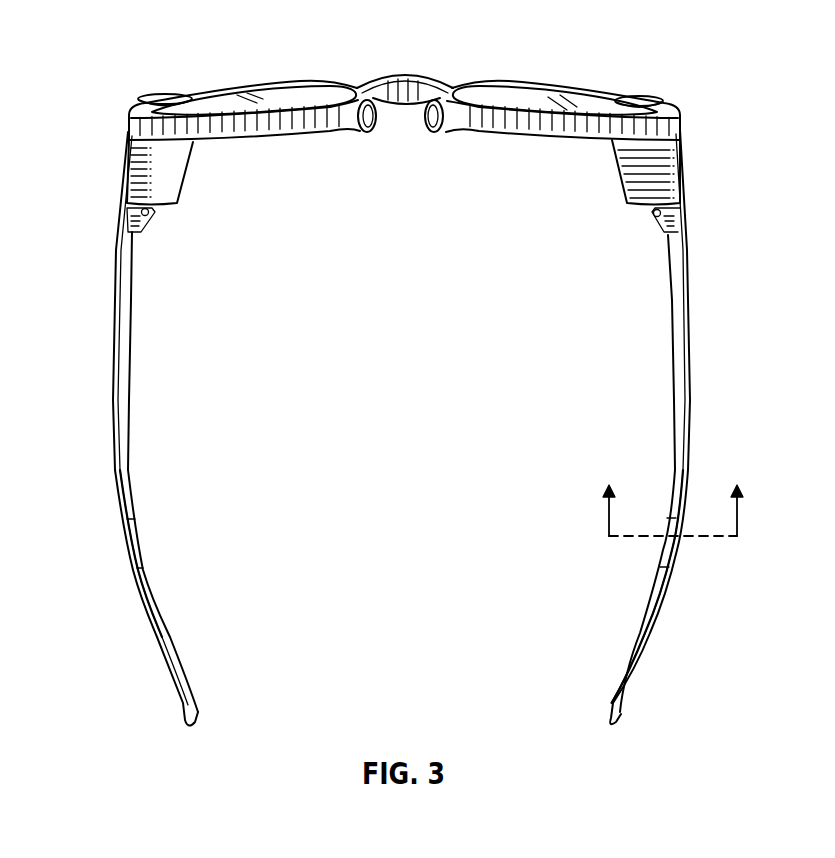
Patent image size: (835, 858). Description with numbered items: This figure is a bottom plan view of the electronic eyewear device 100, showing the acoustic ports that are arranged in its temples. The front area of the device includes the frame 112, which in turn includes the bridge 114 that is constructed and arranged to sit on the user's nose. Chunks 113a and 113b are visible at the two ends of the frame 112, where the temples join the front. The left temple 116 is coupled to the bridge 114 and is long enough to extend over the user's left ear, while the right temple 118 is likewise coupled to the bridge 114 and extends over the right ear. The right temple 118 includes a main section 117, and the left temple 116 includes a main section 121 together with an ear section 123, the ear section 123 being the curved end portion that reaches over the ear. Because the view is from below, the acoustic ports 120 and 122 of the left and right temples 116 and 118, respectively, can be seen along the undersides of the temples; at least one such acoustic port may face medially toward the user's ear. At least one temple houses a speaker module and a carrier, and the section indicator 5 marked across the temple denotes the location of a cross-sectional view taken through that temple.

The electronic eyewear device 100 is at (229, 58).
The frame 112 is at (577, 57).
The chunk 113a is at (126, 145).
The chunk 113b is at (684, 178).
The bridge 114 is at (402, 78).
The left temple 116 is at (700, 367).
The main section 117 is at (112, 312).
The right temple 118 is at (107, 367).
The acoustic port 120 is at (673, 542).
The main section 121 is at (692, 292).
The acoustic port 122 is at (136, 551).
The ear section 123 is at (641, 694).
The section line 5- 5 is at (672, 495).